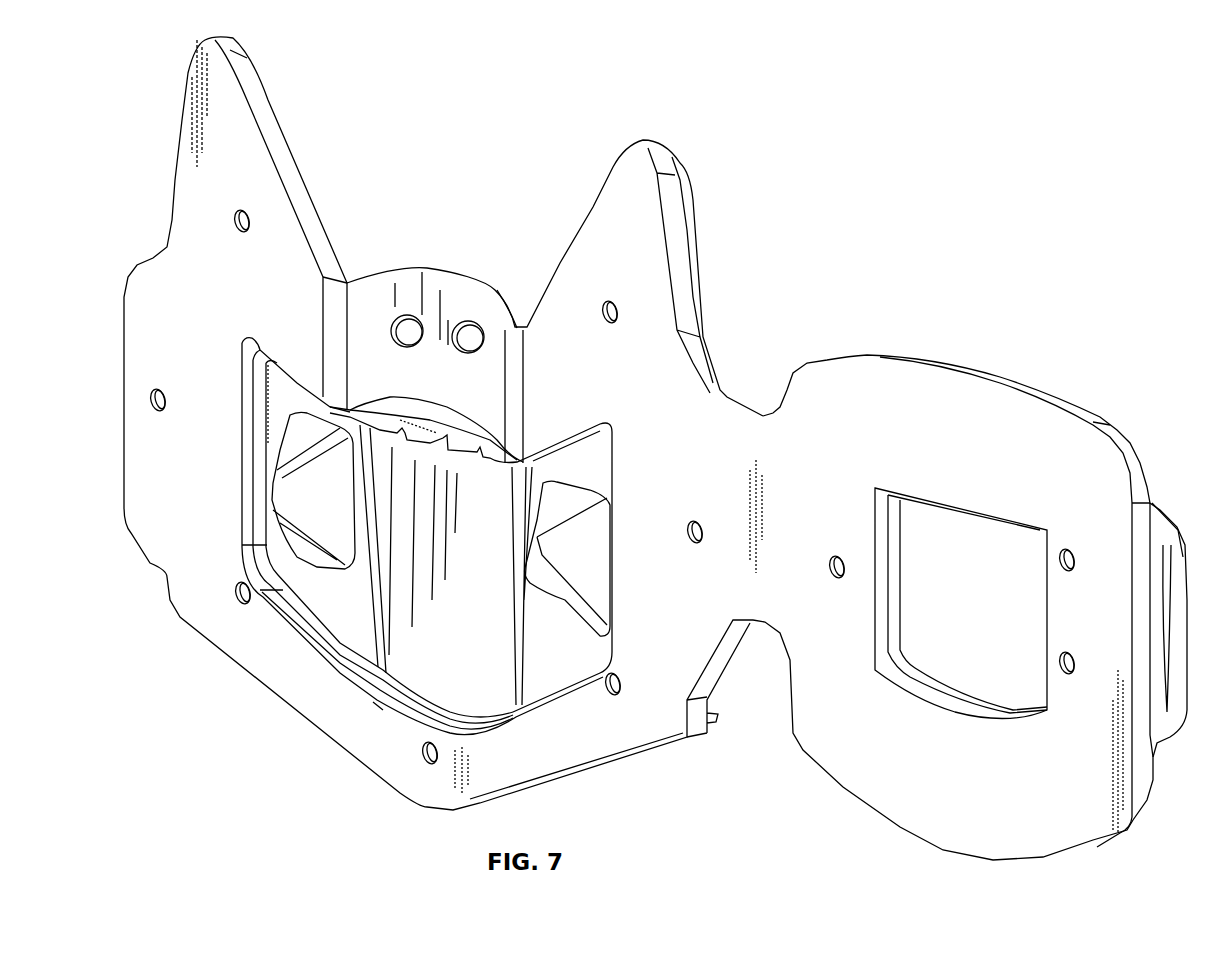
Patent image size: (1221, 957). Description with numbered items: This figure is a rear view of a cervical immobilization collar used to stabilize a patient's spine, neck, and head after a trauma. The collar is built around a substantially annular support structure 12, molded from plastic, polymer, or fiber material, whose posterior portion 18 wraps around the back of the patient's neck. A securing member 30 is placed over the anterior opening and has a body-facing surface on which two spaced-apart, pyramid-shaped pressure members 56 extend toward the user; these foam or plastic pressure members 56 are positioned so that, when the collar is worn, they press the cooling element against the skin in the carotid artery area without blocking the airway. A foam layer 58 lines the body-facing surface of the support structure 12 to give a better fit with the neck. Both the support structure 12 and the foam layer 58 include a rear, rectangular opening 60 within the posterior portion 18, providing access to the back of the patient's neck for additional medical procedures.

The substantially annular support structure 12 is at (270, 72).
The posterior portion 18 is at (1125, 440).
The securing member 30 is at (470, 702).
The pressure members 56 is at (300, 495).
The foam layer 58 is at (243, 147).
The rear, rectangular opening 60 is at (947, 520).